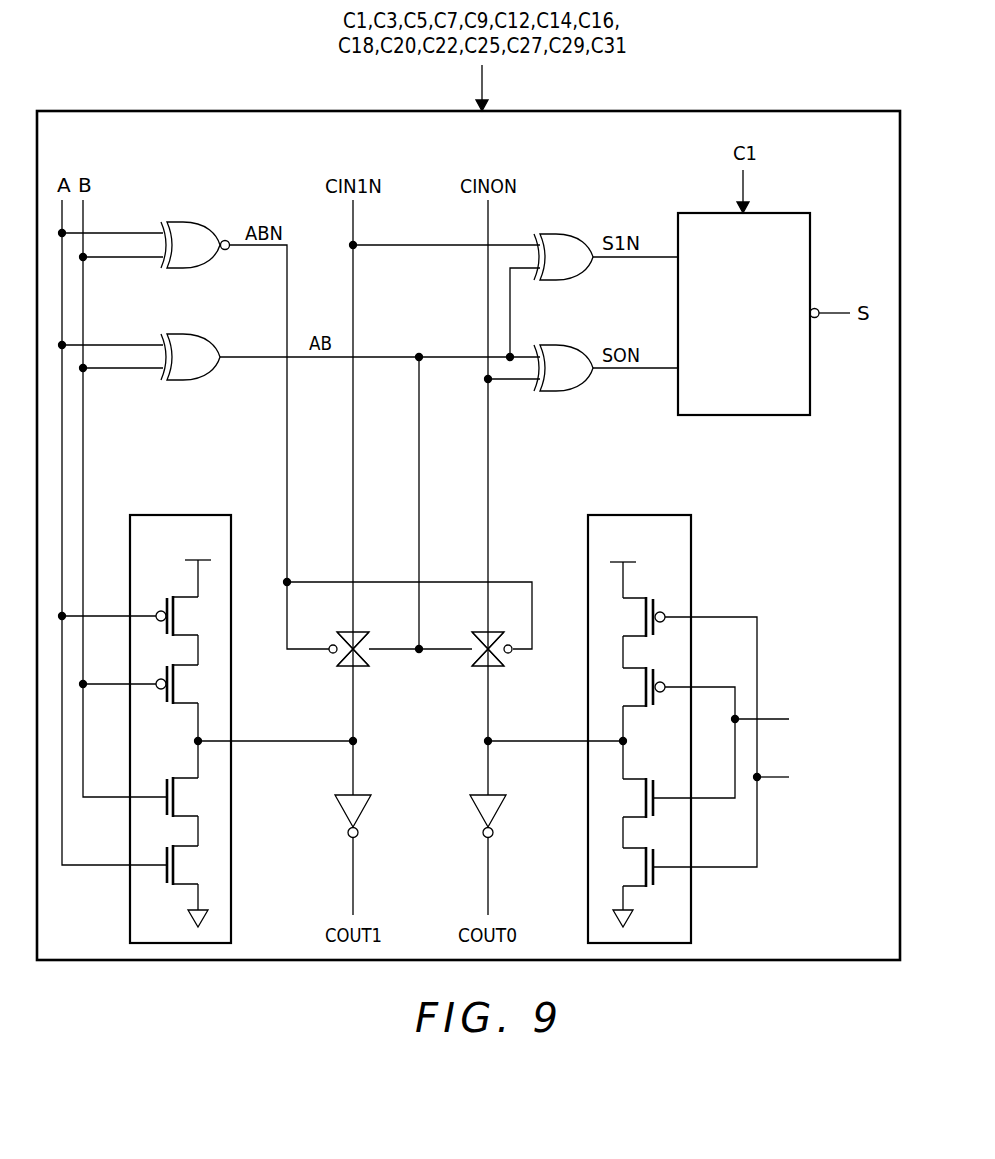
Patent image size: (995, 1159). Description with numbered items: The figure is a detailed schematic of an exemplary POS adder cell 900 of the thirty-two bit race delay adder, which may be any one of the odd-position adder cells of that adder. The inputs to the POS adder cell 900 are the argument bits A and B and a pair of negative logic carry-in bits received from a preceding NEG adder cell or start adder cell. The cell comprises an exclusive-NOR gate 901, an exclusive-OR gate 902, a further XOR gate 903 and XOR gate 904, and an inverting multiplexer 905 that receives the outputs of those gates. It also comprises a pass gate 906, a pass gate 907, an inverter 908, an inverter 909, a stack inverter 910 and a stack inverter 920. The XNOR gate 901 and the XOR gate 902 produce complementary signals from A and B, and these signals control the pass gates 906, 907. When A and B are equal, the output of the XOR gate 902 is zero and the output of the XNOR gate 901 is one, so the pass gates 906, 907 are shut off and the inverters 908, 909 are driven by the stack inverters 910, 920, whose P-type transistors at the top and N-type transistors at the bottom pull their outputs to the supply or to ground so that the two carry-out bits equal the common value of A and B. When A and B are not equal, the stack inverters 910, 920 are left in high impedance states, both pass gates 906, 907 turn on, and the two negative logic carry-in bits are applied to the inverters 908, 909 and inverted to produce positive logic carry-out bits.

The POS adder cell 900 is at (850, 111).
The exclusive-NOR gate 901 is at (208, 263).
The exclusive-OR gate 902 is at (208, 375).
The XOR gate 903 is at (585, 275).
The XOR gate 904 is at (585, 387).
The inverting multiplexer 905 is at (765, 361).
The pass gate 906 is at (341, 668).
The pass gate 907 is at (494, 668).
The inverter 908 is at (362, 808).
The inverter 909 is at (497, 808).
The stack inverter 910 is at (130, 905).
The stack inverter 920 is at (691, 912).